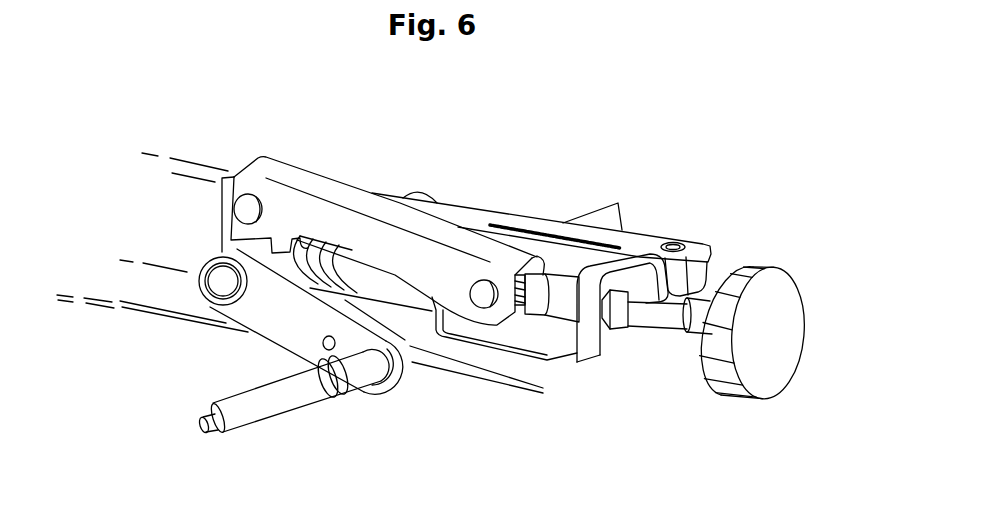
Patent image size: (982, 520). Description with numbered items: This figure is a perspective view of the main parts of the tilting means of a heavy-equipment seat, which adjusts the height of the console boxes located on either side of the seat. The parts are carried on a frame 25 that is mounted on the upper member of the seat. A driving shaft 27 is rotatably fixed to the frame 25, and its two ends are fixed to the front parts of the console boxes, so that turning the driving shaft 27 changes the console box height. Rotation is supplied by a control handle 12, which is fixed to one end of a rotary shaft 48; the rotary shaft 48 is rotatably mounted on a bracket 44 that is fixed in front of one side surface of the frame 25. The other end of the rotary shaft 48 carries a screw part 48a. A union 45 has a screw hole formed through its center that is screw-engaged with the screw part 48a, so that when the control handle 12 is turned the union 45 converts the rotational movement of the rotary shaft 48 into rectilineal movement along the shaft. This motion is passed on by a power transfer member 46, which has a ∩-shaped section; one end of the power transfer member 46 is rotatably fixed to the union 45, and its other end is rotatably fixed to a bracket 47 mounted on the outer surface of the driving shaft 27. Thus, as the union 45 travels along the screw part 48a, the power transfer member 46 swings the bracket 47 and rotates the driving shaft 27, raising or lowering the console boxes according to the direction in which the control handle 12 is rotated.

The control handle 12 is at (733, 397).
The frame 25 is at (545, 204).
The driving shaft 27 is at (217, 287).
The bracket 44 is at (568, 347).
The union 45 is at (483, 297).
The power transfer member 46 is at (343, 195).
The bracket 47 is at (223, 200).
The rotary shaft 48 is at (667, 322).
The screw part 48a is at (552, 345).